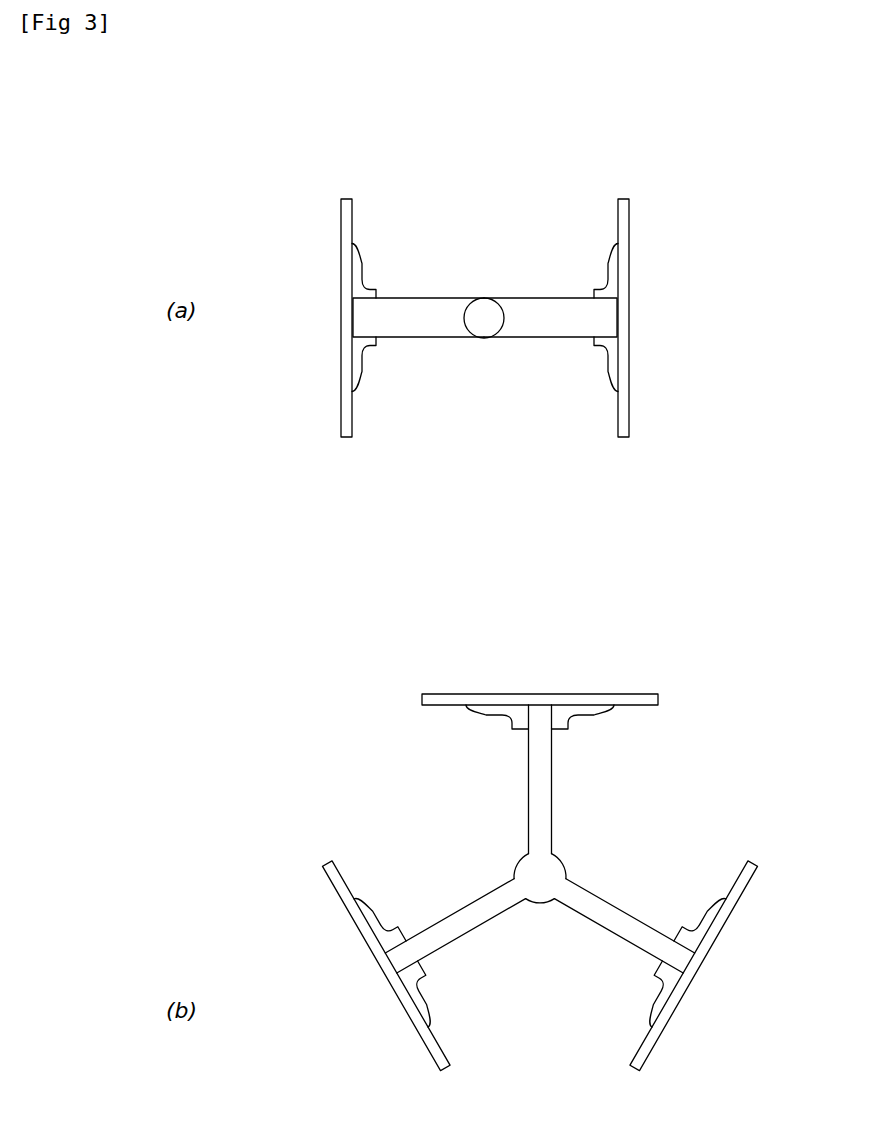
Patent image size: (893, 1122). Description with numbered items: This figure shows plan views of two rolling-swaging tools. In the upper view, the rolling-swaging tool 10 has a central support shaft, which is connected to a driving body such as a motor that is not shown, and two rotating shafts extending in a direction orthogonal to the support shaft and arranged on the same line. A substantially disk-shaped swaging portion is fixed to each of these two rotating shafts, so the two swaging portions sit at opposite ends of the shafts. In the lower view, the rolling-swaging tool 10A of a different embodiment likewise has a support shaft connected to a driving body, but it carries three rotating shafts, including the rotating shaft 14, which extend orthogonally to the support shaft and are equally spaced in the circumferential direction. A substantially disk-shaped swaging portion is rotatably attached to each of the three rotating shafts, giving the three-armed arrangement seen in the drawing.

The rolling-swaging tool 10 is at (485, 193).
The rolling-swaging tool 10A is at (668, 772).
The rotating shaft 14 is at (538, 799).